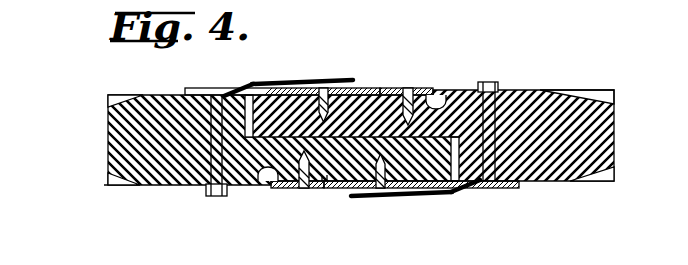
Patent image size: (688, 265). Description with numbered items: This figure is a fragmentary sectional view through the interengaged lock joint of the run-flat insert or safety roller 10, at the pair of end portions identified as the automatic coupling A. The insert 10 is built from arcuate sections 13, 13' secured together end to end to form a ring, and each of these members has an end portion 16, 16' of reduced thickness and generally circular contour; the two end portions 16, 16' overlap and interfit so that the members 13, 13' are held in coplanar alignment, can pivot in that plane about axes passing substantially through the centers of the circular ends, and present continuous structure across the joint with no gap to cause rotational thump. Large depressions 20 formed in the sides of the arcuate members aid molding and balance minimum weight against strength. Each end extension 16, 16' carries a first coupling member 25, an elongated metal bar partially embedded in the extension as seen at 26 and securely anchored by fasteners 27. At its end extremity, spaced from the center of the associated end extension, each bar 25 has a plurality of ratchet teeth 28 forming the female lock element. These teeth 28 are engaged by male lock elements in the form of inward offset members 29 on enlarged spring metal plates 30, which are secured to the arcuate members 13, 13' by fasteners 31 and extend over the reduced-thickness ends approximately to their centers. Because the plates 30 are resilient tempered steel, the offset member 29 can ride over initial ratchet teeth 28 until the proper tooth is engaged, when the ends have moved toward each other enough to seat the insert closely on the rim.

The run-flat insert or safety roller 10 is at (541, 82).
The arcuate section 13 is at (344, 140).
The arcuate section 13' is at (344, 140).
The end portion of reduced thickness 16 is at (344, 124).
The end portion of reduced thickness 16' is at (344, 168).
The large depression 20 is at (120, 95).
The first coupling member 25 is at (422, 88).
The embedded portion 26 is at (362, 88).
The fastener 27 is at (405, 88).
The ratchet teeth 28 is at (264, 82).
The inward offset member 29 is at (290, 87).
The spring metal plate 30 is at (247, 82).
The fastener 31 is at (495, 82).
The automatic coupling A is at (97, 152).